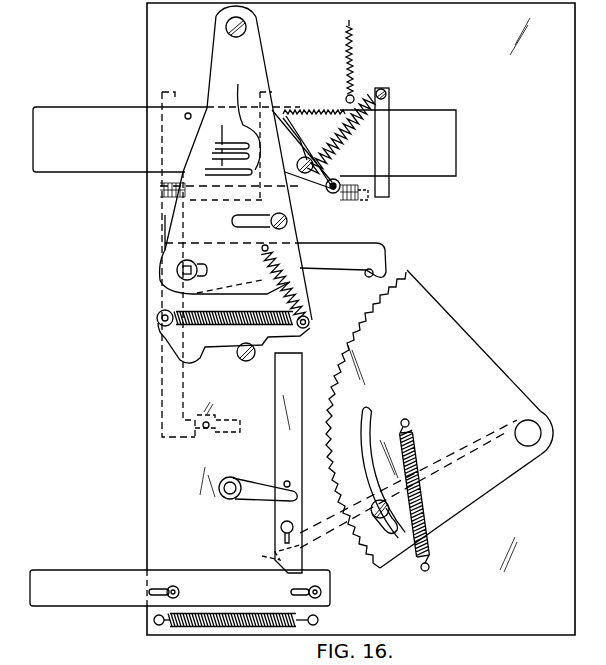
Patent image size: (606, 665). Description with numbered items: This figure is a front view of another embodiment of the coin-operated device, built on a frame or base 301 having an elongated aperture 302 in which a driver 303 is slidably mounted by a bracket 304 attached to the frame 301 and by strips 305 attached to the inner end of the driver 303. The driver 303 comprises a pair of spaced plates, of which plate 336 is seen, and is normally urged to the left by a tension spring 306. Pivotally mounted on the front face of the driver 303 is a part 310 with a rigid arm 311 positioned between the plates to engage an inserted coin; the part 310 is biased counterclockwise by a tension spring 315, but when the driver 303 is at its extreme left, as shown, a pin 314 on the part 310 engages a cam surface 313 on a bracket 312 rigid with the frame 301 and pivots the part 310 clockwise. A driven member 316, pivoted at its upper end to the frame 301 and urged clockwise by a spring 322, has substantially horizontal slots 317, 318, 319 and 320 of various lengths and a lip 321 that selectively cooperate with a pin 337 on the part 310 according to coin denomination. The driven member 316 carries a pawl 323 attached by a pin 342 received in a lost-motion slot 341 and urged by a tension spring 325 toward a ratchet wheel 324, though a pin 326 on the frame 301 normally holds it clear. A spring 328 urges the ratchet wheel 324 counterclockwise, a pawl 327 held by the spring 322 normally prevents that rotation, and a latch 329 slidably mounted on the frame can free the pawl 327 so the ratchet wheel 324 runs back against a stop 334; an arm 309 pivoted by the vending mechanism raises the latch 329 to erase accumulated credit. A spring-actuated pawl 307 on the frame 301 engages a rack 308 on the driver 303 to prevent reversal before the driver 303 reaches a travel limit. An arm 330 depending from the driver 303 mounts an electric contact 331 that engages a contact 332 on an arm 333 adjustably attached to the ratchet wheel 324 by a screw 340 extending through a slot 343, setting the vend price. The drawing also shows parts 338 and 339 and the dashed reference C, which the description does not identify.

The frame 301 is at (155, 488).
The elongated aperture 302 is at (328, 108).
The driver 303 is at (396, 183).
The bracket 304 is at (155, 90).
The strips 305 is at (385, 162).
The tension spring 306 is at (350, 200).
The spring-actuated pawl 307 is at (355, 100).
The rack 308 is at (353, 60).
The arm 309 is at (240, 498).
The part 310 is at (318, 153).
The rigid arm 311 is at (300, 110).
The bracket 312 is at (259, 82).
The cam surface 313 is at (295, 195).
The pin 314 is at (285, 112).
The tension spring 315 is at (389, 130).
The driven member 316 is at (162, 233).
The slot 317 is at (226, 144).
The slot 318 is at (218, 164).
The slot 319 is at (215, 177).
The slot 320 is at (233, 192).
The lip 321 is at (207, 140).
The spring 322 is at (208, 330).
The pawl 323 is at (380, 254).
The ratchet wheel 324 is at (437, 312).
The tension spring 325 is at (274, 262).
The pin 326 is at (367, 277).
The pawl 327 is at (330, 330).
The spring 328 is at (423, 488).
The latch 329 is at (283, 391).
The arm 330 is at (160, 370).
The electric contact 331 is at (222, 433).
The contact 332 is at (278, 557).
The arm 333 is at (333, 538).
The stop 334 is at (412, 575).
The plate 336 is at (170, 133).
The pin 337 is at (189, 113).
The bottom bar 338 is at (85, 597).
The tension spring 339 is at (240, 628).
The screw 340 is at (374, 520).
The slot 341 is at (158, 288).
The pin 342 is at (177, 272).
The slot 343 is at (373, 414).
The reference point C is at (236, 75).